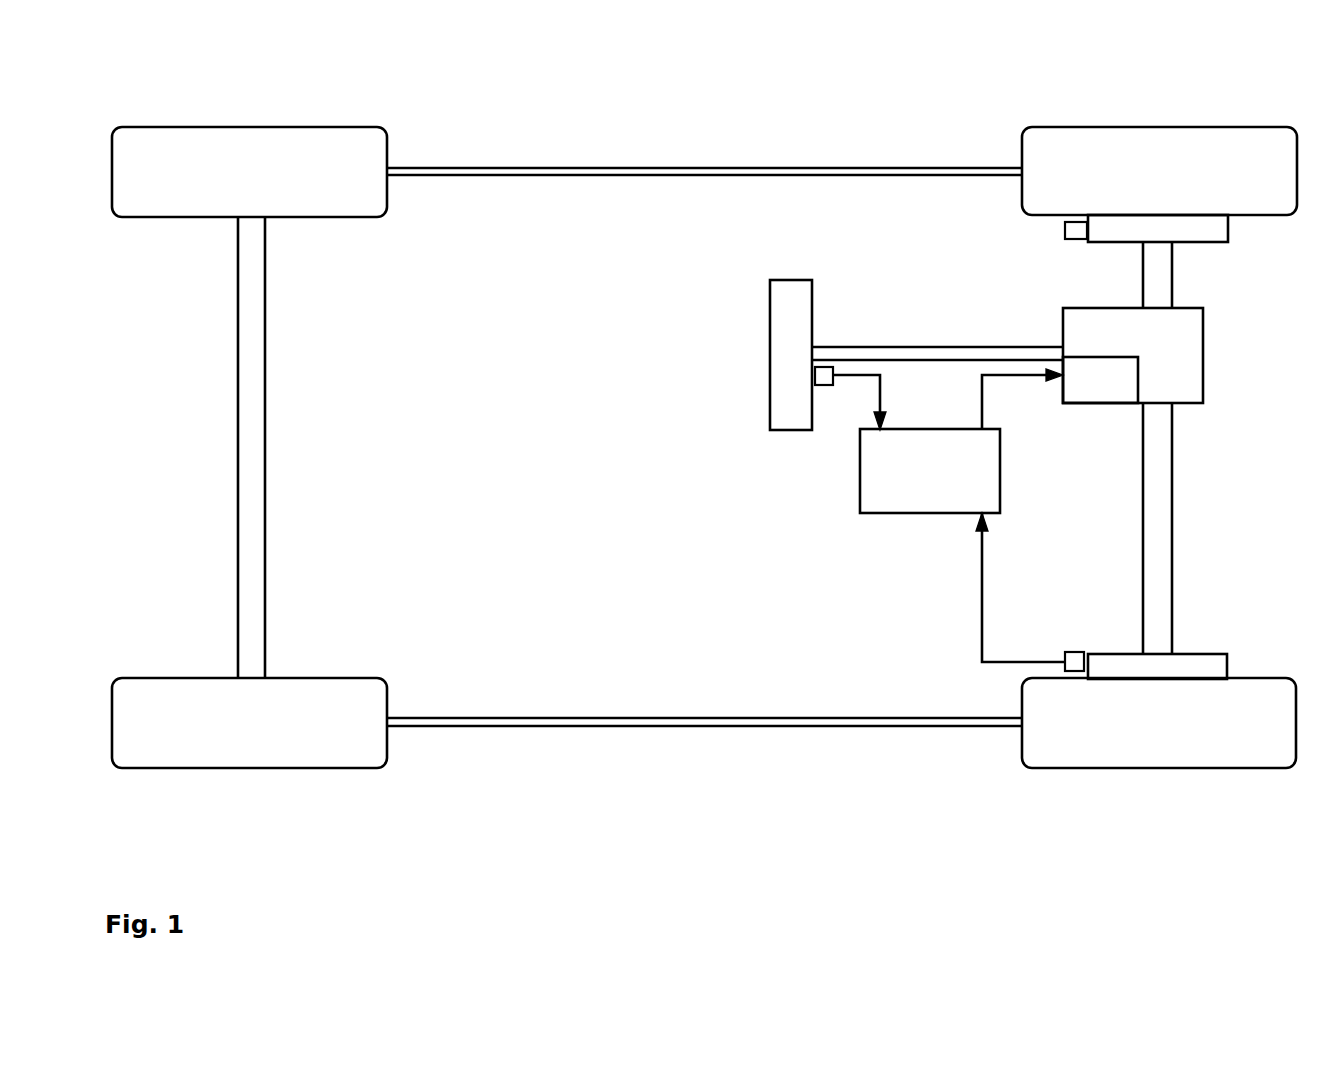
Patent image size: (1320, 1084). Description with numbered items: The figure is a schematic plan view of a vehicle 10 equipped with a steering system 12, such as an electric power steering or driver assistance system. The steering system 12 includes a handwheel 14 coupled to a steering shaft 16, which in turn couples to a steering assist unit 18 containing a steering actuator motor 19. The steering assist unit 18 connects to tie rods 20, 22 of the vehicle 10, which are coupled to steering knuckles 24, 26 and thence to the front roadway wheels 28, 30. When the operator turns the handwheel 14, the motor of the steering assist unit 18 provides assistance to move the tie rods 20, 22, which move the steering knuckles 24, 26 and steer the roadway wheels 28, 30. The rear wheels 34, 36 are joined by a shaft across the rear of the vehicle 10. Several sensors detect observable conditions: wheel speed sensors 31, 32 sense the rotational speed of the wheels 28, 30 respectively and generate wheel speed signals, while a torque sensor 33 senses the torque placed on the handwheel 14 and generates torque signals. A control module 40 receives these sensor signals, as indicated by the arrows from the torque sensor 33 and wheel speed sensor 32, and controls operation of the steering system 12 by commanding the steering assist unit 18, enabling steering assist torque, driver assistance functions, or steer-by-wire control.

The vehicle 10 is at (704, 399).
The steering system 12 is at (1017, 320).
The handwheel 14 is at (796, 279).
The steering shaft 16 is at (938, 346).
The steering assist unit 18 is at (1204, 358).
The steering actuator motor 19 is at (1140, 386).
The tie rod 20 is at (1173, 291).
The tie rod 22 is at (1173, 537).
The steering knuckle 24 is at (1110, 244).
The steering knuckle 26 is at (1203, 652).
The roadway wheel 28 is at (1020, 146).
The roadway wheel 30 is at (1262, 677).
The wheel speed sensor 31 is at (1063, 230).
The wheel speed sensor 32 is at (1078, 651).
The torque sensor 33 is at (822, 366).
The rear wheel 34 is at (388, 152).
The rear wheel 36 is at (388, 700).
The control module 40 is at (912, 428).